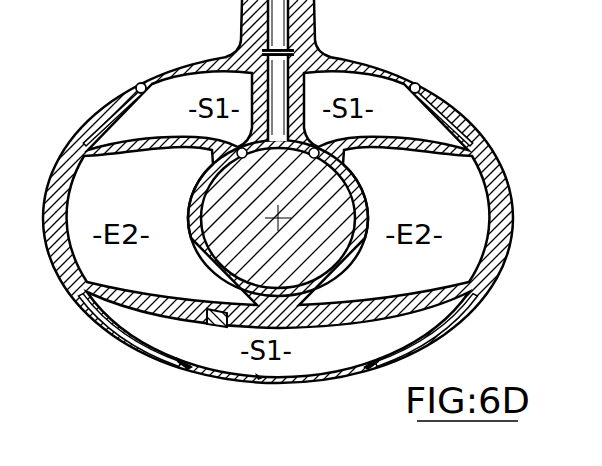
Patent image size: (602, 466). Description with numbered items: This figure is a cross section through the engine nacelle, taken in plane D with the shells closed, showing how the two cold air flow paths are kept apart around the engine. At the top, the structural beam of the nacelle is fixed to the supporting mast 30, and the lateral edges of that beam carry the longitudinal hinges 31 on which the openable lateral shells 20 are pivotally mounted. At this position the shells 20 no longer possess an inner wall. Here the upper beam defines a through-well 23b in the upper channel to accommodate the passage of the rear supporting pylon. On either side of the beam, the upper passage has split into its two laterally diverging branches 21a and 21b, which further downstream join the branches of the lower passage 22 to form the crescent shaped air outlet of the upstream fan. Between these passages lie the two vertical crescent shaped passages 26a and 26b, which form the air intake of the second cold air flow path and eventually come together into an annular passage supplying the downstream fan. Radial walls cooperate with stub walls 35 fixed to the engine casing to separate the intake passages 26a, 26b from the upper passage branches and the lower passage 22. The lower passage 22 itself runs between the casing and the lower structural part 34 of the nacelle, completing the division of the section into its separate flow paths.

The openable lateral shells 20 is at (58, 262).
The branch of the upper passage 21a is at (192, 92).
The branch of the upper passage 21b is at (385, 100).
The lower passage 22 is at (133, 322).
The through-well 23b is at (245, 57).
The vertical crescent shaped passage 26a is at (95, 198).
The vertical crescent shaped passage 26b is at (462, 191).
The supporting mast 30 is at (298, 20).
The longitudinal hinges 31 is at (136, 87).
The lower structural part 34 is at (256, 377).
The stub walls 35 is at (210, 147).